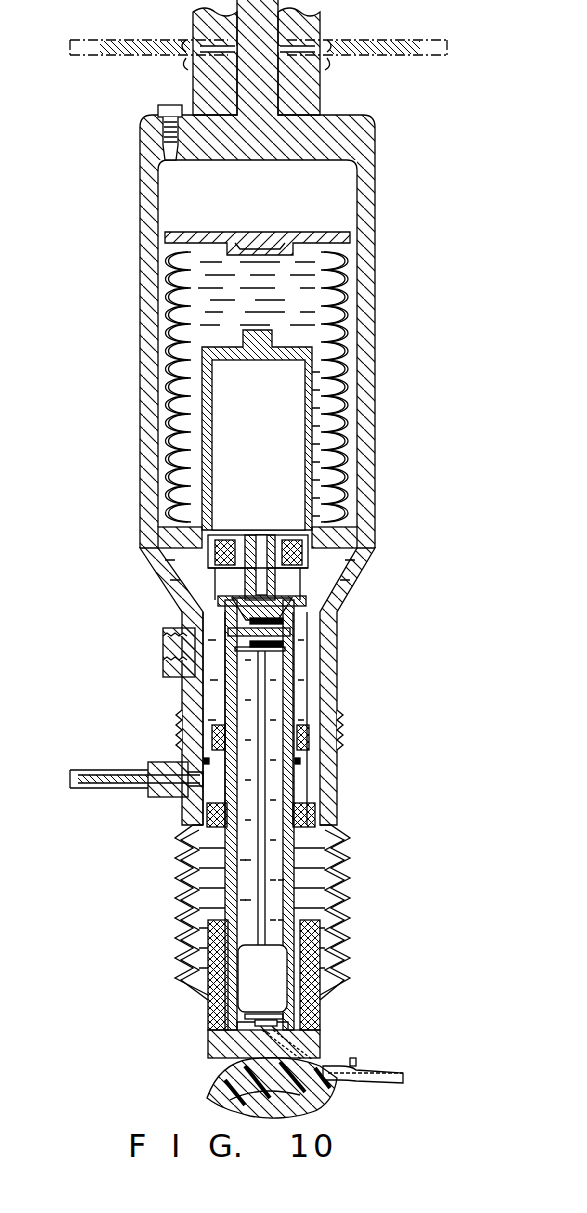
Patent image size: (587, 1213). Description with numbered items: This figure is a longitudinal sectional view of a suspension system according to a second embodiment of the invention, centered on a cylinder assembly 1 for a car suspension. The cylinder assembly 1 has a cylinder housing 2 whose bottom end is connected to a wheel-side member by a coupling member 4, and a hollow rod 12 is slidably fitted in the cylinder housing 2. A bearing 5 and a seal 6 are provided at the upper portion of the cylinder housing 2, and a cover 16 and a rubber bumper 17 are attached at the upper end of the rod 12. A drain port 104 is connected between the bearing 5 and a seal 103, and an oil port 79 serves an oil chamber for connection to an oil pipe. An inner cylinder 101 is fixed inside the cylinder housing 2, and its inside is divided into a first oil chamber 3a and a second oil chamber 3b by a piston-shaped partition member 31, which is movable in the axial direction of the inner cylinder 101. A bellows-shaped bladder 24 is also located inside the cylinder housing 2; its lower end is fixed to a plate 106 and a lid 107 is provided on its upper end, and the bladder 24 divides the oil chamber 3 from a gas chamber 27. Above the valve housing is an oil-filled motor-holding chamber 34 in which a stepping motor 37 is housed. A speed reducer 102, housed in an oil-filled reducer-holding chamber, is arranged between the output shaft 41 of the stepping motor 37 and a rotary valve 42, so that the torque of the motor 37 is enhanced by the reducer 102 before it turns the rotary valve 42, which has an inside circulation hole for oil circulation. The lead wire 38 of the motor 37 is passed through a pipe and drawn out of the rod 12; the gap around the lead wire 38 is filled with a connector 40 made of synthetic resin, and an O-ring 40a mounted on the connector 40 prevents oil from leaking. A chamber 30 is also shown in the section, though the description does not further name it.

The cylinder assembly 1 is at (415, 459).
The cylinder housing 2 is at (365, 333).
The first oil chamber 3 is at (205, 387).
The first oil chamber 3a is at (215, 457).
The second oil chamber 3b is at (213, 623).
The coupling member 4 is at (212, 1089).
The bearing 5 is at (213, 803).
The seal 6 is at (312, 818).
The hollow rod 12 is at (290, 708).
The cover 16 is at (177, 883).
The rubber bumper 17 is at (218, 953).
The bellows-shaped bladder 24 is at (345, 283).
The gas chamber 27 is at (343, 204).
The valve chamber 30 is at (300, 583).
The piston-shaped partition member 31 is at (311, 563).
The motor-holding chamber 34 is at (292, 908).
The stepping motor 37 is at (267, 981).
The lead wire 38 is at (395, 1070).
The connector 40 is at (309, 1054).
The O-ring 40a is at (311, 1041).
The output shaft 41 is at (267, 874).
The rotary valve 42 is at (250, 603).
The oil port 79 is at (165, 661).
The inner cylinder 101 is at (336, 389).
The speed reducer 102 is at (305, 636).
The seal 103 is at (300, 763).
The drain port 104 is at (90, 790).
The plate 106 is at (166, 537).
The lid 107 is at (252, 232).